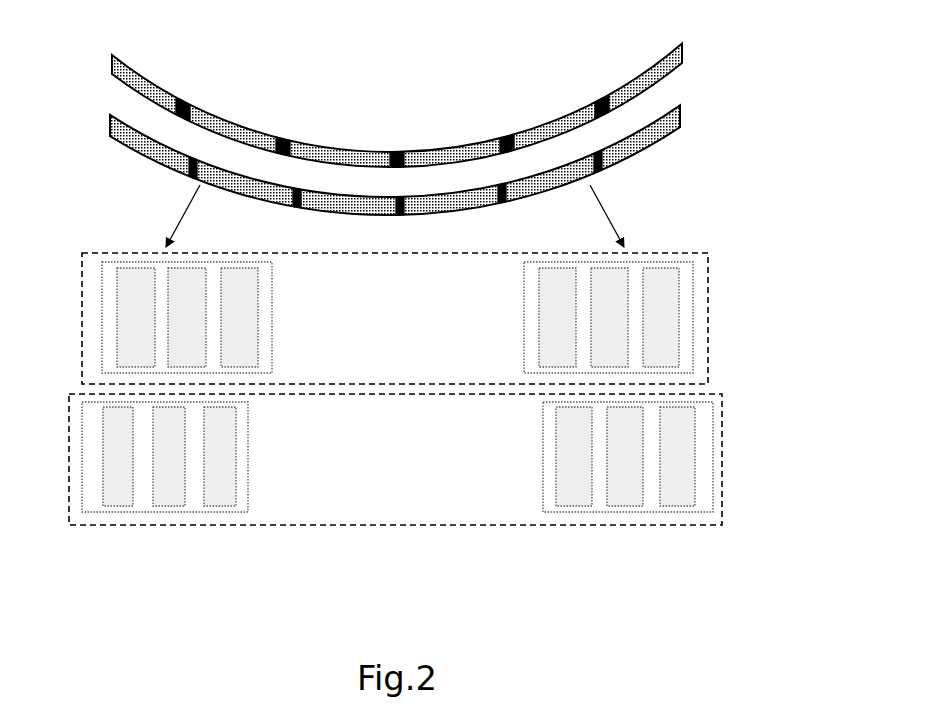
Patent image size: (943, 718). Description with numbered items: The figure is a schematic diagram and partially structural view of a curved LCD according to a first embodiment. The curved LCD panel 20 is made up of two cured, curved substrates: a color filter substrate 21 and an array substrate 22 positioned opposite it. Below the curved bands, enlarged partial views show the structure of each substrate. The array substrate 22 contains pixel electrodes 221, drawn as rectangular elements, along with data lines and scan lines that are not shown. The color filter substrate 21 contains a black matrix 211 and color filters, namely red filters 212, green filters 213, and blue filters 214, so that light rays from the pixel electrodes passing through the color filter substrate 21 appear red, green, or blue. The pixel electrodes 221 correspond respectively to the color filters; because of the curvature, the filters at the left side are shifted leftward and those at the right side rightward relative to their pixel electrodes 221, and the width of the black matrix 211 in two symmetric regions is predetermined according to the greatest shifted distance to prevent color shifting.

The curved LCD panel 20 is at (433, 293).
The color filter substrate 21 is at (682, 52).
The array substrate 22 is at (680, 120).
The black matrix 211 is at (700, 472).
The pixel electrodes 221 is at (687, 318).
The red filters 212 is at (105, 494).
The green filters 213 is at (163, 494).
The blue filters 214 is at (218, 494).